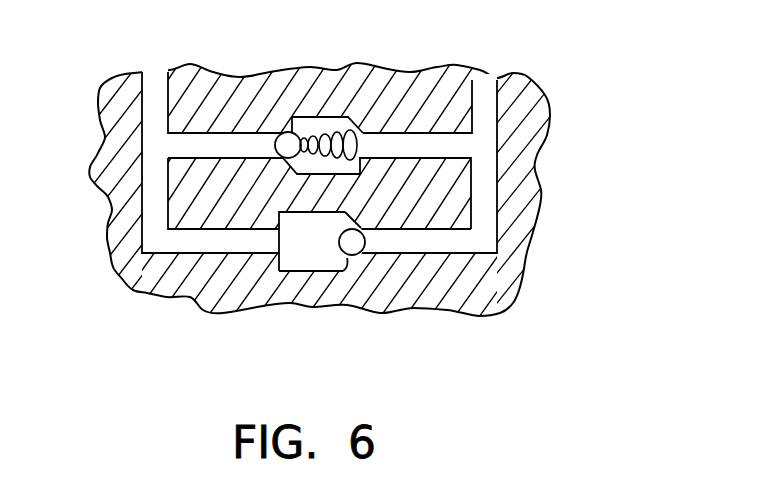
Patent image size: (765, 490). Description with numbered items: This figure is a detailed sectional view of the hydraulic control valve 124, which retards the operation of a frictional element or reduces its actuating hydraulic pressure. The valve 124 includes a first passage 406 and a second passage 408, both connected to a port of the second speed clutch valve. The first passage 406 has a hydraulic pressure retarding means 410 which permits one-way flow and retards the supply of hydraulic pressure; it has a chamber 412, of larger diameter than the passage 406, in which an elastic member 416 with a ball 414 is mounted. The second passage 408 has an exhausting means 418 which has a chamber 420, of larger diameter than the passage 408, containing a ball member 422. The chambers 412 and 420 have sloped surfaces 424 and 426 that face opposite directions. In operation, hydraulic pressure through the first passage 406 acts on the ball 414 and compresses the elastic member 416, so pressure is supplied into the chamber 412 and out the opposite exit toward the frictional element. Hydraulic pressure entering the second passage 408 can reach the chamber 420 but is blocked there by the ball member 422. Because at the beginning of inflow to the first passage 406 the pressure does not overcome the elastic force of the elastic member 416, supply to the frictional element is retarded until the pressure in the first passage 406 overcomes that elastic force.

The hydraulic control valve 124 is at (548, 89).
The first passage 406 is at (205, 146).
The second passage 408 is at (172, 245).
The hydraulic pressure retarding means 410 is at (360, 111).
The chamber 412 is at (343, 175).
The ball 414 is at (288, 132).
The elastic member 416 is at (352, 120).
The exhausting means 418 is at (291, 278).
The chamber 420 is at (319, 260).
The ball member 422 is at (343, 267).
The sloped surface 424 is at (302, 175).
The sloped surface 426 is at (355, 243).